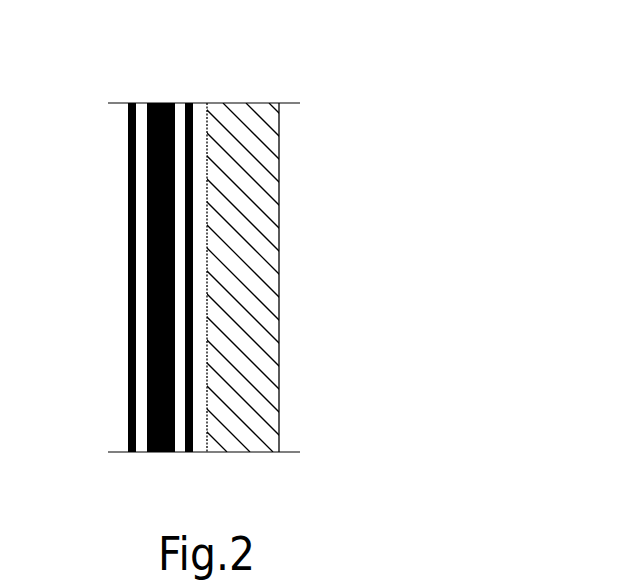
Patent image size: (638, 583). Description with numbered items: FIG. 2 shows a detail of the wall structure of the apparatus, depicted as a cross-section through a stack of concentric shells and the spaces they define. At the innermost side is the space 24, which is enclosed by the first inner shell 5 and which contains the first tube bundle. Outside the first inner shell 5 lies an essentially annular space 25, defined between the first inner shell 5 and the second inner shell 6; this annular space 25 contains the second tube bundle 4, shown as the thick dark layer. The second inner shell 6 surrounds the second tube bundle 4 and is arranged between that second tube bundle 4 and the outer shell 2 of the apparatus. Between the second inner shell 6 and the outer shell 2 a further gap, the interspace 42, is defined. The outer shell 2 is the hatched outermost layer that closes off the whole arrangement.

The outer shell 2 is at (279, 272).
The second tube bundle 4 is at (166, 103).
The first inner shell 5 is at (128, 188).
The second inner shell 6 is at (192, 110).
The space 24 is at (92, 300).
The annular space 25 is at (141, 100).
The interspace 42 is at (198, 456).